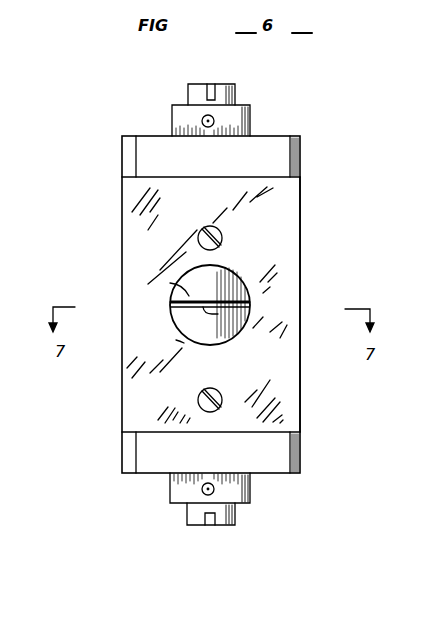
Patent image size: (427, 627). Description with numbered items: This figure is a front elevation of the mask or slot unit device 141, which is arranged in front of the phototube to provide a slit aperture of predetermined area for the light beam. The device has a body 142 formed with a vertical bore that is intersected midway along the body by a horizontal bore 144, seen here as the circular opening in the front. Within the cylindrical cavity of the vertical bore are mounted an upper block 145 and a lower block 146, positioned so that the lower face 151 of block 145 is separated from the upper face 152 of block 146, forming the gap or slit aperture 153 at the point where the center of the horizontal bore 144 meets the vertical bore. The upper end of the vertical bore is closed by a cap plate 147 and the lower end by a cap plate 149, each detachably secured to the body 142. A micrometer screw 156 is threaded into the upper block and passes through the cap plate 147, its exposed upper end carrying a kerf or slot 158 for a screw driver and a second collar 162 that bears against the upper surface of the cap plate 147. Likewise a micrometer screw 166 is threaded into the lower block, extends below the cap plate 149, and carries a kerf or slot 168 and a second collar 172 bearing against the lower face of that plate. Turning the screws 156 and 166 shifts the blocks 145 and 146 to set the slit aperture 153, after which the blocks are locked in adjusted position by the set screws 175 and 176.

The slot unit device 141 is at (86, 160).
The body 142 is at (300, 256).
The horizontal bore 144 is at (176, 340).
The block 145 is at (222, 287).
The block 146 is at (240, 333).
The cap plate 147 is at (278, 154).
The cap plate 149 is at (150, 449).
The lower face 151 is at (170, 283).
The upper face 152 is at (218, 314).
The slit aperture 153 is at (250, 304).
The micrometer screw 156 is at (238, 93).
The kerf or slot 158 is at (218, 72).
The second collar 162 is at (250, 118).
The micrometer screw 166 is at (236, 517).
The kerf or slot 168 is at (210, 530).
The second collar 172 is at (178, 497).
The set screw 175 is at (222, 238).
The set screw 176 is at (200, 398).